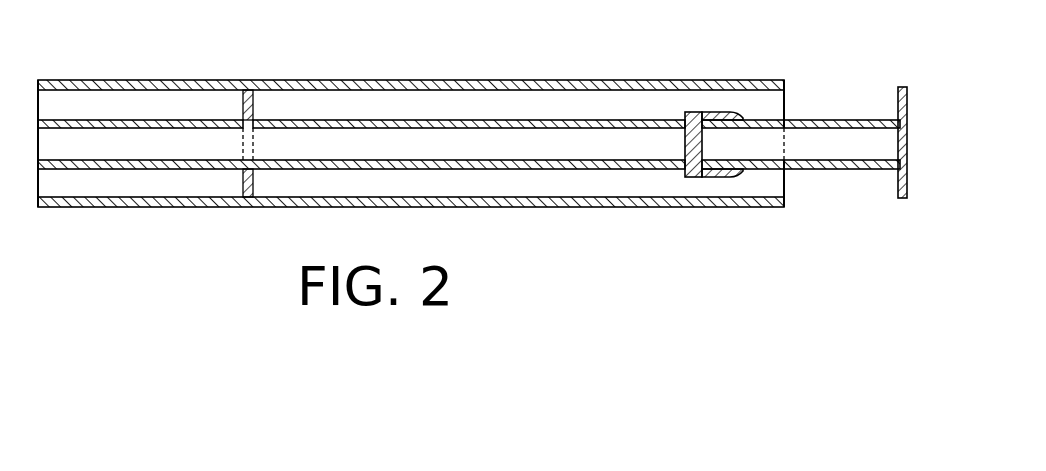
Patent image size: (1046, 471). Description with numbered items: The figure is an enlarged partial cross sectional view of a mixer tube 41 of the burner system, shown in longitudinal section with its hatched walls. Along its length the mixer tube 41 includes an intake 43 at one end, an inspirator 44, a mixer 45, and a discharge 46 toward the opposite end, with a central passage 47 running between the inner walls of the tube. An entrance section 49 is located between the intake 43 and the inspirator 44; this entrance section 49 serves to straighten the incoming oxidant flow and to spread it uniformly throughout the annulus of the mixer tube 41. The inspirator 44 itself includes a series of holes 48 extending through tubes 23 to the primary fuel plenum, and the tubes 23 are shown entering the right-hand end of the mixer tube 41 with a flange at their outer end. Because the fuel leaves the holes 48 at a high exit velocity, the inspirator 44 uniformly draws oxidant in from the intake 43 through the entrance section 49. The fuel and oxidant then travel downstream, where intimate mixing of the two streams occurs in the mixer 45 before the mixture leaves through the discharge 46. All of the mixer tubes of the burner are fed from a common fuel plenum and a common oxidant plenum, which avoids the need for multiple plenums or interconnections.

The mixer tube 41 is at (187, 207).
The discharge 46 is at (112, 103).
The mixer 45 is at (302, 105).
The central channel 47 is at (412, 143).
The intake 43 is at (784, 103).
The holes 48 is at (698, 110).
The tubes 23 is at (852, 142).
The inspirator 44 is at (719, 179).
The entrance section 49 is at (757, 182).